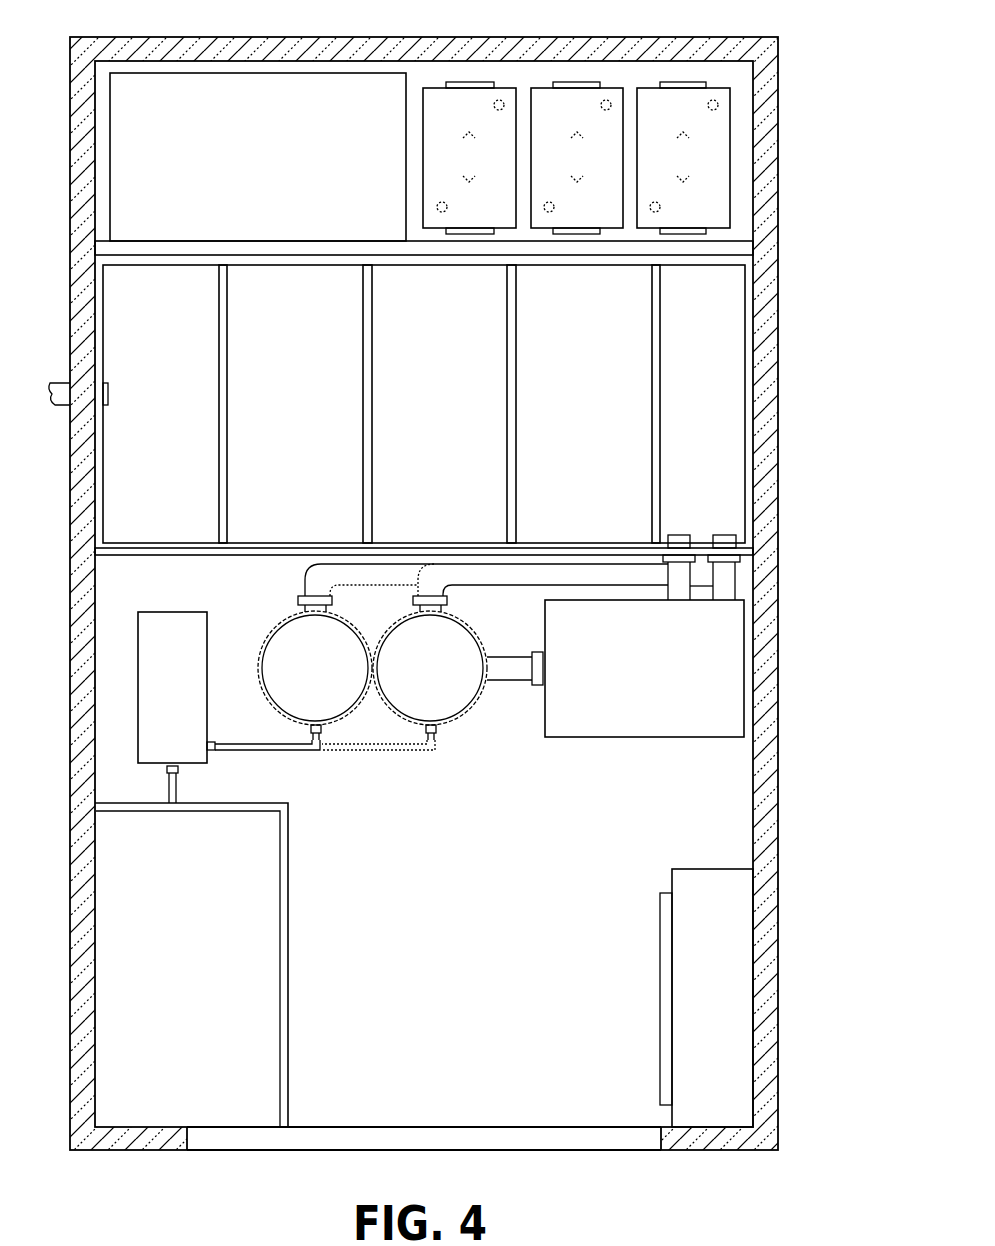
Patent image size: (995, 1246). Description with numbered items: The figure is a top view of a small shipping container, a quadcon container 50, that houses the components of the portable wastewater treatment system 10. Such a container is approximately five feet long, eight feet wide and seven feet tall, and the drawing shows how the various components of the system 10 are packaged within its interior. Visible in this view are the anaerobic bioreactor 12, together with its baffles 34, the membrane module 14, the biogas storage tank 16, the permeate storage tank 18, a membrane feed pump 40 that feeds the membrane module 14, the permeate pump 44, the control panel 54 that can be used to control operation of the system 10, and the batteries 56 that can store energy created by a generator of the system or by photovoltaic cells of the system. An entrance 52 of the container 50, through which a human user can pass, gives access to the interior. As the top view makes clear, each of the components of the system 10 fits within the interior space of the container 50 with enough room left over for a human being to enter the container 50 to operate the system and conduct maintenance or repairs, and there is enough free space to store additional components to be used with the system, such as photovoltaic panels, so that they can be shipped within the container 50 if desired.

The portable wastewater treatment system 10 is at (832, 62).
The anaerobic bioreactor 12 is at (95, 341).
The membrane module 14 is at (300, 681).
The biogas storage tank 16 is at (245, 169).
The permeate storage tank 18 is at (170, 969).
The baffles 34 is at (219, 455).
The membrane feed pump 40 is at (637, 682).
The permeate pump 44 is at (155, 694).
The quadcon container 50 is at (778, 442).
The entrance 52 is at (600, 1145).
The control panel 54 is at (695, 1012).
The batteries 56 is at (454, 170).